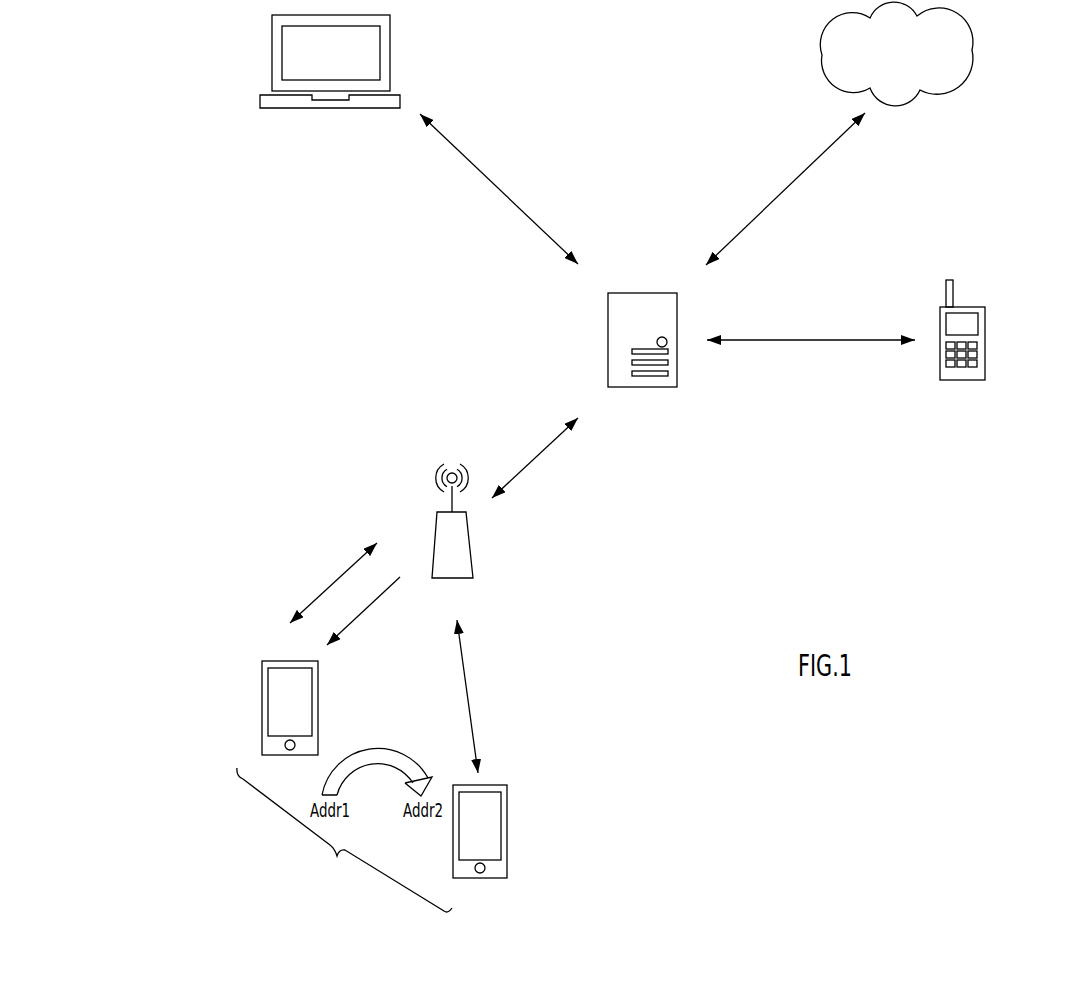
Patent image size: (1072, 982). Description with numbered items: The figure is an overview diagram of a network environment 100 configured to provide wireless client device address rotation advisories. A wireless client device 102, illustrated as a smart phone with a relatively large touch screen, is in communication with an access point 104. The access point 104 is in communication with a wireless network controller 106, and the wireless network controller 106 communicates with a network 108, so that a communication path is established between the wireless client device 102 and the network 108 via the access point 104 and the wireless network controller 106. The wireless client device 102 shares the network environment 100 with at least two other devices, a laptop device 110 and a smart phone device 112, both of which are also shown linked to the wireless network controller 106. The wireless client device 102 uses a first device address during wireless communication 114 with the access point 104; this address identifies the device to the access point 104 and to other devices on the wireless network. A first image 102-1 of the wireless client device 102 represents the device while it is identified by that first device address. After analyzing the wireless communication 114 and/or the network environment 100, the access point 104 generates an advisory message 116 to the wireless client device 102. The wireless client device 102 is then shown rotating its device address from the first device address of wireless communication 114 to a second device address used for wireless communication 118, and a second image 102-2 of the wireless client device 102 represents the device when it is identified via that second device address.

The network environment 100 is at (100, 162).
The wireless client device 102 is at (344, 840).
The first image of the wireless client device 102-1 is at (262, 697).
The second image of the wireless client device 102-2 is at (507, 822).
The access point 104 is at (473, 572).
The wireless network controller 106 is at (608, 352).
The network 108 is at (822, 52).
The laptop device 110 is at (272, 52).
The smart phone device 112 is at (985, 327).
The wireless communication 114 is at (350, 565).
The advisory message 116 is at (347, 630).
The wireless communication 118 is at (465, 661).